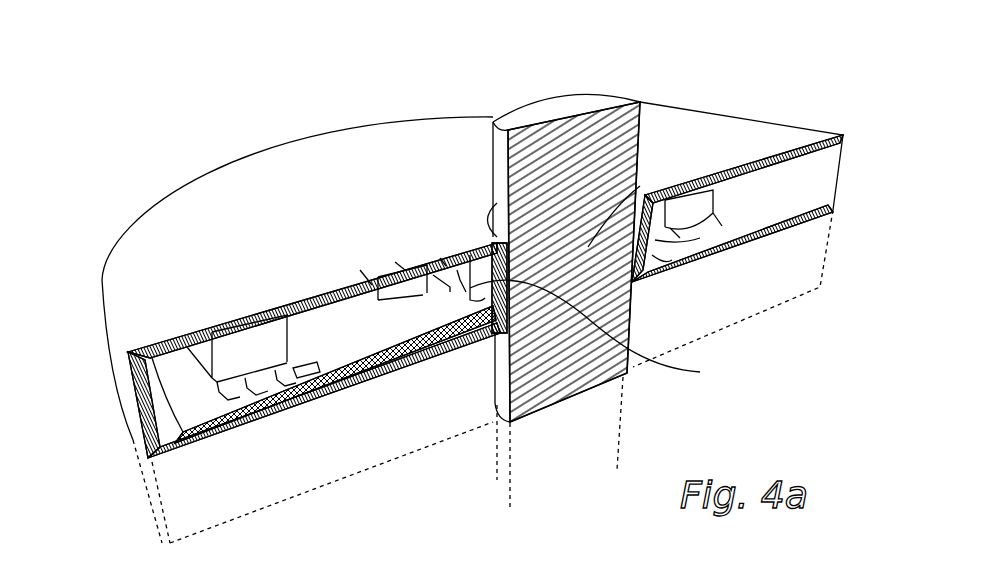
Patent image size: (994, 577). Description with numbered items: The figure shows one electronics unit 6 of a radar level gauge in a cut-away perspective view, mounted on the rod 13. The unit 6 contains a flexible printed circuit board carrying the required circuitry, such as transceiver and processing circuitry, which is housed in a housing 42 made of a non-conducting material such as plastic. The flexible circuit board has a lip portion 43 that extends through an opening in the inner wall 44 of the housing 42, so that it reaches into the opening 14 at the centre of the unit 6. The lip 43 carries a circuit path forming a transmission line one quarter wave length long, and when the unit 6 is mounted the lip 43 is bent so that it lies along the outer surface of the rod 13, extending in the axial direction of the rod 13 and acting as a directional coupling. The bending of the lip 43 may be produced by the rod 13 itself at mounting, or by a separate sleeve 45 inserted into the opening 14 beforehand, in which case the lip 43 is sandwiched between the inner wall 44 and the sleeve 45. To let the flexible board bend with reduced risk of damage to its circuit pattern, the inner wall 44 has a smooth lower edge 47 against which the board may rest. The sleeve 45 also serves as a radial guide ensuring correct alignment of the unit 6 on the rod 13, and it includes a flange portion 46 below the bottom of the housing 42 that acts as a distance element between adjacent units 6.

The unit 6 is at (785, 112).
The rod 13 is at (614, 151).
The opening 14 is at (640, 186).
The housing 42 is at (780, 142).
The lip portion 43 is at (600, 331).
The inner wall 44 is at (655, 262).
The sleeve 45 is at (655, 238).
The flange portion 46 is at (472, 346).
The smooth lower edge 47 is at (652, 275).